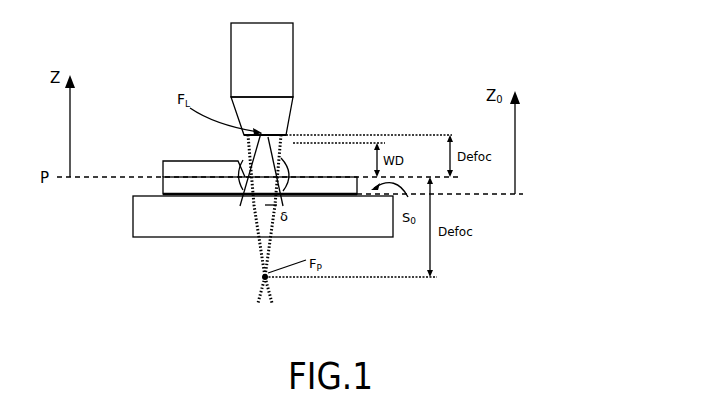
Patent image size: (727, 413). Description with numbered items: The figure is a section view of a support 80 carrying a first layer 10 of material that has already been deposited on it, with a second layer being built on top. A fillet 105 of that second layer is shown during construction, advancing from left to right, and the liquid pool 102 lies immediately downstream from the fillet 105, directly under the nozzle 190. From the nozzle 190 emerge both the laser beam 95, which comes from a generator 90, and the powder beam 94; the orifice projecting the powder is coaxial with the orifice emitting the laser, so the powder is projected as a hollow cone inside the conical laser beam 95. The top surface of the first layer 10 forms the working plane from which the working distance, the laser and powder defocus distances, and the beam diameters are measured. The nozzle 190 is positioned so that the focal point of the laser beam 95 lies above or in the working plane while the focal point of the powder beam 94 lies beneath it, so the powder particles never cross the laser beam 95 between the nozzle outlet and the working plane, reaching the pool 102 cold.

The generator 90 is at (287, 53).
The nozzle 190 is at (283, 115).
The laser beam 95 is at (295, 138).
The powder beam 94 is at (245, 158).
The liquid pool 102 is at (288, 168).
The fillet 105 is at (177, 167).
The first layer 10 is at (178, 185).
The support 80 is at (160, 215).